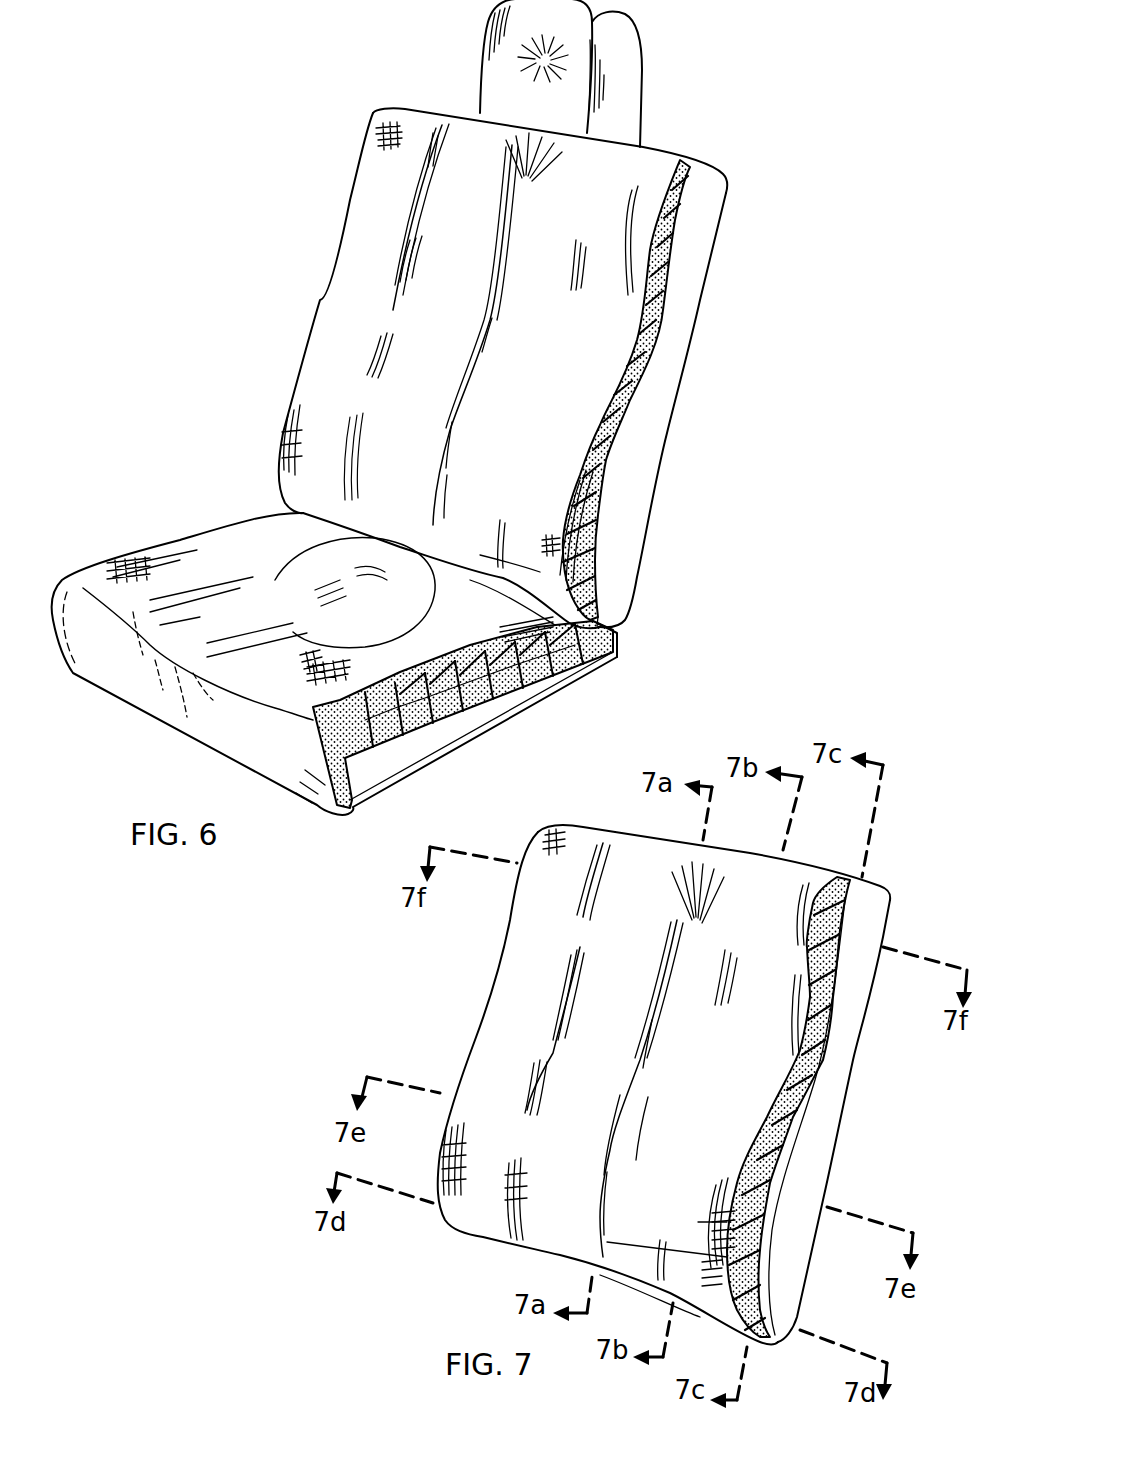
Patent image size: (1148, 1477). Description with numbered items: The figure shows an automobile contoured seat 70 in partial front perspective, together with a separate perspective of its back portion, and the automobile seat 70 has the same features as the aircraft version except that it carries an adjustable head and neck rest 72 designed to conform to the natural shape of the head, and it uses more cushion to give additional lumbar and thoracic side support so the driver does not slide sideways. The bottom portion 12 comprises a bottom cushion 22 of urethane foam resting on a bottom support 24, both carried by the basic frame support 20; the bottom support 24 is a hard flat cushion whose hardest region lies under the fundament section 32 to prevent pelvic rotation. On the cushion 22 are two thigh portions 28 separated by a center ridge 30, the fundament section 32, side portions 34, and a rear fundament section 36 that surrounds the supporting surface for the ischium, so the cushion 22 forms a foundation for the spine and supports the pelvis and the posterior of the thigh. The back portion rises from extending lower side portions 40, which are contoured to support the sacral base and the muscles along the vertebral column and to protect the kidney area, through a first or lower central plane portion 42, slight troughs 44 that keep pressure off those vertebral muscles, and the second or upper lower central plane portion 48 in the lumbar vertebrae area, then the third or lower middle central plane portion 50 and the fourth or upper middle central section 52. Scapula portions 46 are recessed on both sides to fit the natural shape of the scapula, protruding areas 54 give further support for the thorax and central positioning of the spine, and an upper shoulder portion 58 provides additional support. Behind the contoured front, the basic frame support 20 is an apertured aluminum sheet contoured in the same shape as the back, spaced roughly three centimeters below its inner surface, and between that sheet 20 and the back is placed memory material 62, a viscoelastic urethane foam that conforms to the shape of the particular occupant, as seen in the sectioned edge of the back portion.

In FIG. 6, the automobile contoured seat 70 is at (360, 50).
In FIG. 6, the head and neck rest 72 is at (640, 40).
In FIG. 6, the upper shoulder portion 58 is at (435, 138).
In FIG. 7, the upper shoulder portion 58 is at (597, 857).
In FIG. 6, the scapula portion 46 is at (408, 250).
In FIG. 7, the scapula portion 46 is at (570, 997).
In FIG. 6, the trough 44 is at (381, 352).
In FIG. 7, the trough 44 is at (535, 1085).
In FIG. 6, the protruding area 54 is at (510, 213).
In FIG. 7, the protruding area 54 is at (680, 943).
In FIG. 6, the upper middle central section 52 is at (497, 320).
In FIG. 7, the upper middle central section 52 is at (657, 1023).
In FIG. 6, the lower middle central plane portion 50 is at (450, 427).
In FIG. 7, the lower middle central plane portion 50 is at (650, 1100).
In FIG. 6, the upper lower central plane portion 48 is at (450, 477).
In FIG. 7, the upper lower central plane portion 48 is at (610, 1178).
In FIG. 6, the lower central plane portion 42 is at (470, 541).
In FIG. 7, the lower central plane portion 42 is at (673, 1263).
In FIG. 6, the extending lower side portion 40 is at (503, 567).
In FIG. 7, the extending lower side portion 40 is at (703, 1287).
In FIG. 6, the rear fundament section 36 is at (617, 642).
In FIG. 6, the side portion 34 is at (163, 567).
In FIG. 6, the fundament section 32 is at (327, 590).
In FIG. 6, the center ridge 30 is at (175, 662).
In FIG. 6, the thigh portion 28 is at (300, 693).
In FIG. 6, the bottom support 24 is at (383, 740).
In FIG. 6, the bottom cushion 22 is at (433, 720).
In FIG. 6, the bottom portion 12 is at (310, 797).
In FIG. 7, the memory material 62 is at (773, 1188).
In FIG. 7, the basic frame support 20 is at (767, 1233).